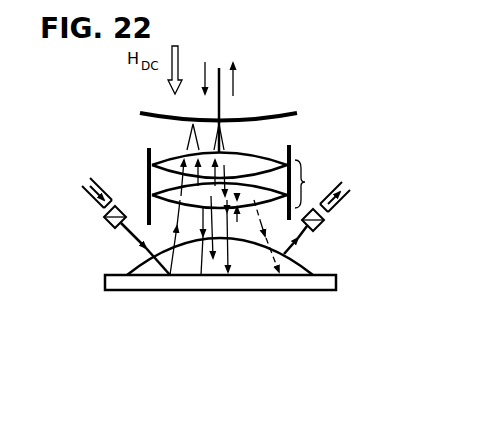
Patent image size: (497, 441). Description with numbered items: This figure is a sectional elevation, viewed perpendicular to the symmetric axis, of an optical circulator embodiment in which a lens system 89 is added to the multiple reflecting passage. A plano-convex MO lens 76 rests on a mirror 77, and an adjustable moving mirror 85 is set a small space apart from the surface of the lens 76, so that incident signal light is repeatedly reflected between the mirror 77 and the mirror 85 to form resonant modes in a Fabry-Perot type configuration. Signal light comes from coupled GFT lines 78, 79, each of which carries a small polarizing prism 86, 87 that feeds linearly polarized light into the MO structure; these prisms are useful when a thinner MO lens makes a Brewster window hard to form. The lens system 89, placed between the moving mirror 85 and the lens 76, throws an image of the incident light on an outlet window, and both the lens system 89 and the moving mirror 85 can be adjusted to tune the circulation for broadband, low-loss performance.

The plano-convex MO lens 76 is at (189, 265).
The mirror 77 is at (248, 282).
The GFT line 78 is at (86, 203).
The GFT line 79 is at (348, 203).
The adjustable moving mirror 85 is at (255, 124).
The polarizing prism 86 is at (105, 223).
The polarizing prism 87 is at (320, 228).
The lens system 89 is at (305, 182).